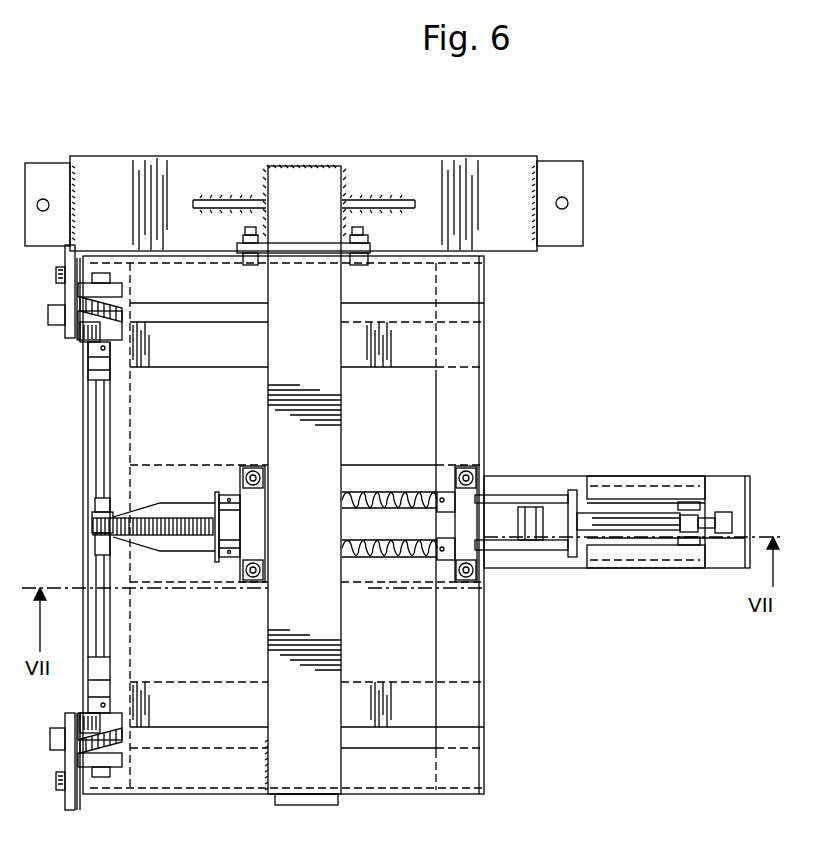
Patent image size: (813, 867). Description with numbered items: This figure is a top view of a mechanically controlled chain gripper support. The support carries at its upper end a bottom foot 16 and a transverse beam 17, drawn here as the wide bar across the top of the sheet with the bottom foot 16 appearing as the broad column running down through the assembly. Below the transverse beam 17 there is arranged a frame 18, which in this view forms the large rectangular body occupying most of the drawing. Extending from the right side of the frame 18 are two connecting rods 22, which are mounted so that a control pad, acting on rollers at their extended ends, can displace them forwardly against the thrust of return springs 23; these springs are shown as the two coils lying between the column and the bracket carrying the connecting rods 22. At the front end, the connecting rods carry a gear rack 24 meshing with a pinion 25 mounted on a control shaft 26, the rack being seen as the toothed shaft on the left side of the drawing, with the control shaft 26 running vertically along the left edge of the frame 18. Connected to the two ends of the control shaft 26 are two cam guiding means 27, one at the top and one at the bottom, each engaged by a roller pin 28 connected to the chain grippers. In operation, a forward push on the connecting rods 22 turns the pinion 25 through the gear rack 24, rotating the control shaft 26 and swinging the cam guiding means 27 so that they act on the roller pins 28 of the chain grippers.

The bottom foot 16 is at (478, 160).
The transverse beam 17 is at (330, 632).
The frame 18 is at (473, 670).
The connecting rods 22 is at (502, 547).
The return springs 23 is at (362, 508).
The gear rack 24 is at (171, 518).
The pinion 25 is at (93, 524).
The control shaft 26 is at (100, 432).
The cam guiding means 27 is at (125, 760).
The roller pins 28 is at (84, 722).